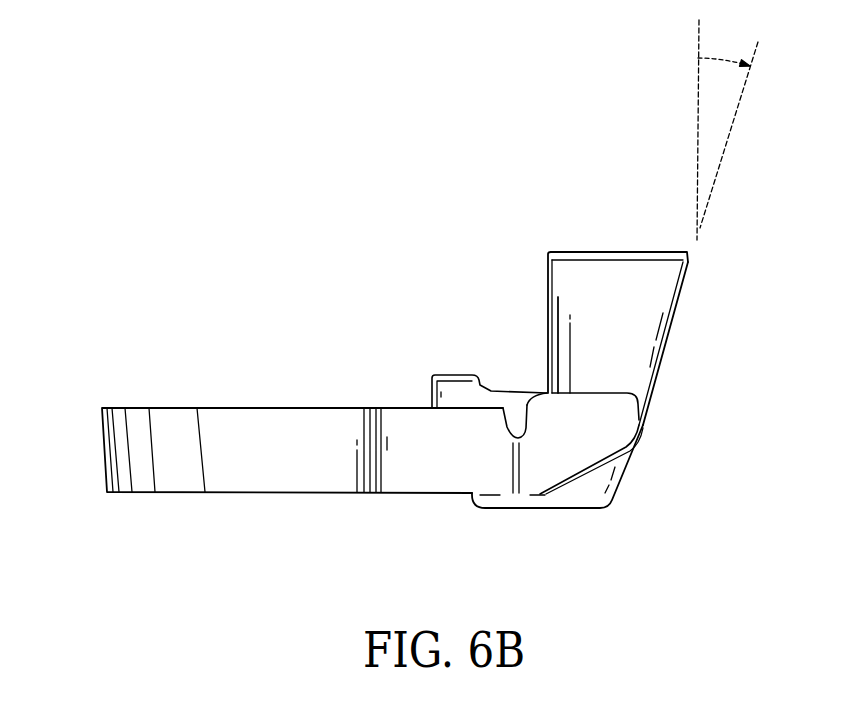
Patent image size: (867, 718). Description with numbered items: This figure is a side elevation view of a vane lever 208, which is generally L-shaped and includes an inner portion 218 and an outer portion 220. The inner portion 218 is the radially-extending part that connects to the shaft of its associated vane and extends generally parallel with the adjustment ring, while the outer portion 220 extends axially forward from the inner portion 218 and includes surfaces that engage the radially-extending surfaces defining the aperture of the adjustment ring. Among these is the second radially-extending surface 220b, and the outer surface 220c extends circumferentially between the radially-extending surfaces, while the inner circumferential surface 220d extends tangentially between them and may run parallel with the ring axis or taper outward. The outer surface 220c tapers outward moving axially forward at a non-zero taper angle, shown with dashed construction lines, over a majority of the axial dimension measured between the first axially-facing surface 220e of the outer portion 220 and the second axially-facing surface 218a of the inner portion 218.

The vane lever 208 is at (117, 299).
The inner portion 218 is at (260, 365).
The second axially-facing surface 218a is at (503, 393).
The outer portion 220 is at (691, 363).
The second radially-extending surface 220b is at (582, 282).
The outer surface 220c is at (672, 322).
The inner circumferential surface 220d is at (547, 277).
The first axially-facing surface 220e is at (647, 248).